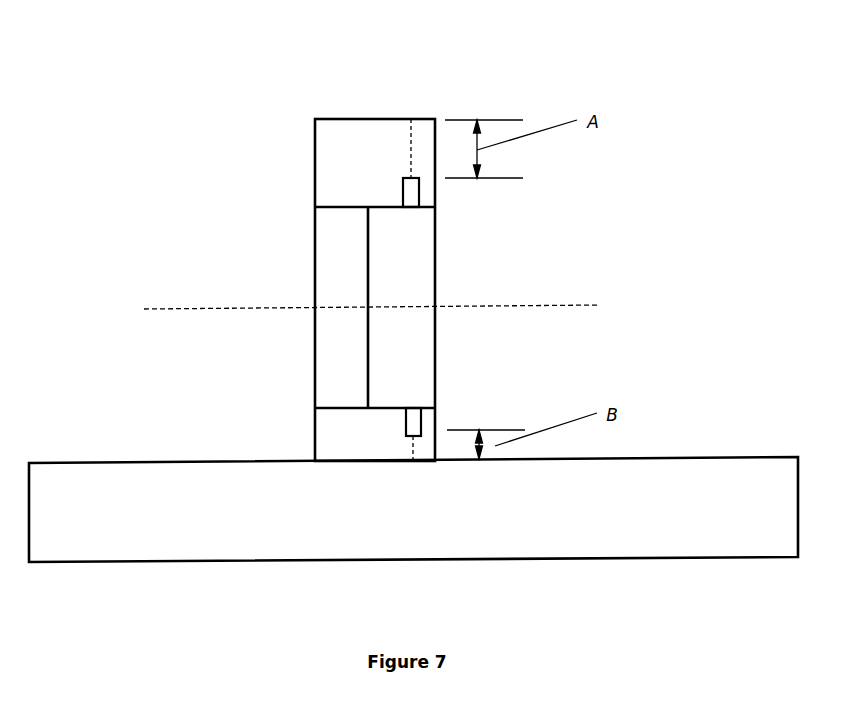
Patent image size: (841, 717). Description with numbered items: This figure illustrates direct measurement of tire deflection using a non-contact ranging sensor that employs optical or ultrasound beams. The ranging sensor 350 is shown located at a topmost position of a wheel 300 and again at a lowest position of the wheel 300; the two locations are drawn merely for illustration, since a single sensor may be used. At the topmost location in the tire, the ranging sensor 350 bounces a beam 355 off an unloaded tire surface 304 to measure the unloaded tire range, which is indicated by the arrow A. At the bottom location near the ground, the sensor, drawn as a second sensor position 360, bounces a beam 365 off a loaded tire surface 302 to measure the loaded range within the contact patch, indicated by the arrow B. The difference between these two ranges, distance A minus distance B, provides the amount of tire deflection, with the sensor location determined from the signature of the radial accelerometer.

The wheel 300 is at (364, 368).
The loaded tire surface 302 is at (378, 463).
The unloaded tire surface 304 is at (363, 118).
The ranging sensor 350 is at (401, 187).
The beam 355 is at (416, 140).
The lower protrusion 360 is at (423, 422).
The beam 365 is at (415, 458).